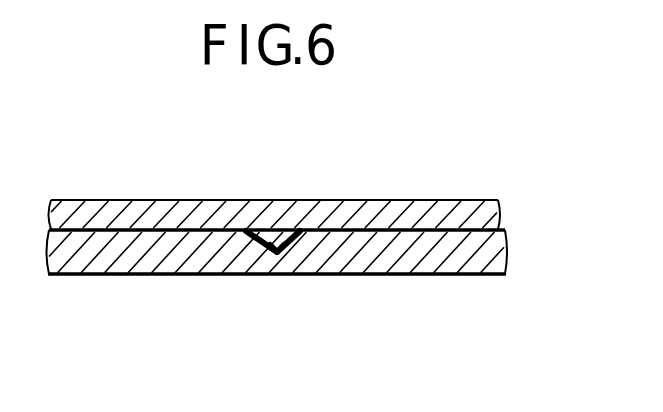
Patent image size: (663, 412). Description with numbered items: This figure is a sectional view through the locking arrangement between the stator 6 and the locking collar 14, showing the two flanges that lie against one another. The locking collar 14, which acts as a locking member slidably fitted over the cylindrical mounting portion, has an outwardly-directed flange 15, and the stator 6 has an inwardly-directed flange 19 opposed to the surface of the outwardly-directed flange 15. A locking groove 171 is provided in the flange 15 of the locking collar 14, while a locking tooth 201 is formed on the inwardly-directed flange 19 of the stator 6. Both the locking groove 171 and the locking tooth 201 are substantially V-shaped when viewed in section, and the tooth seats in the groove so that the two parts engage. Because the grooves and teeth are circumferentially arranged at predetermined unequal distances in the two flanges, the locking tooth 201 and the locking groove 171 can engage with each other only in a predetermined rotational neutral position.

The stator 6 is at (450, 200).
The inwardly-directed flange 19 is at (372, 212).
The outwardly-directed flange 15 is at (375, 258).
The locking collar 14 is at (446, 276).
The locking groove 171 is at (274, 234).
The locking tooth 201 is at (290, 250).